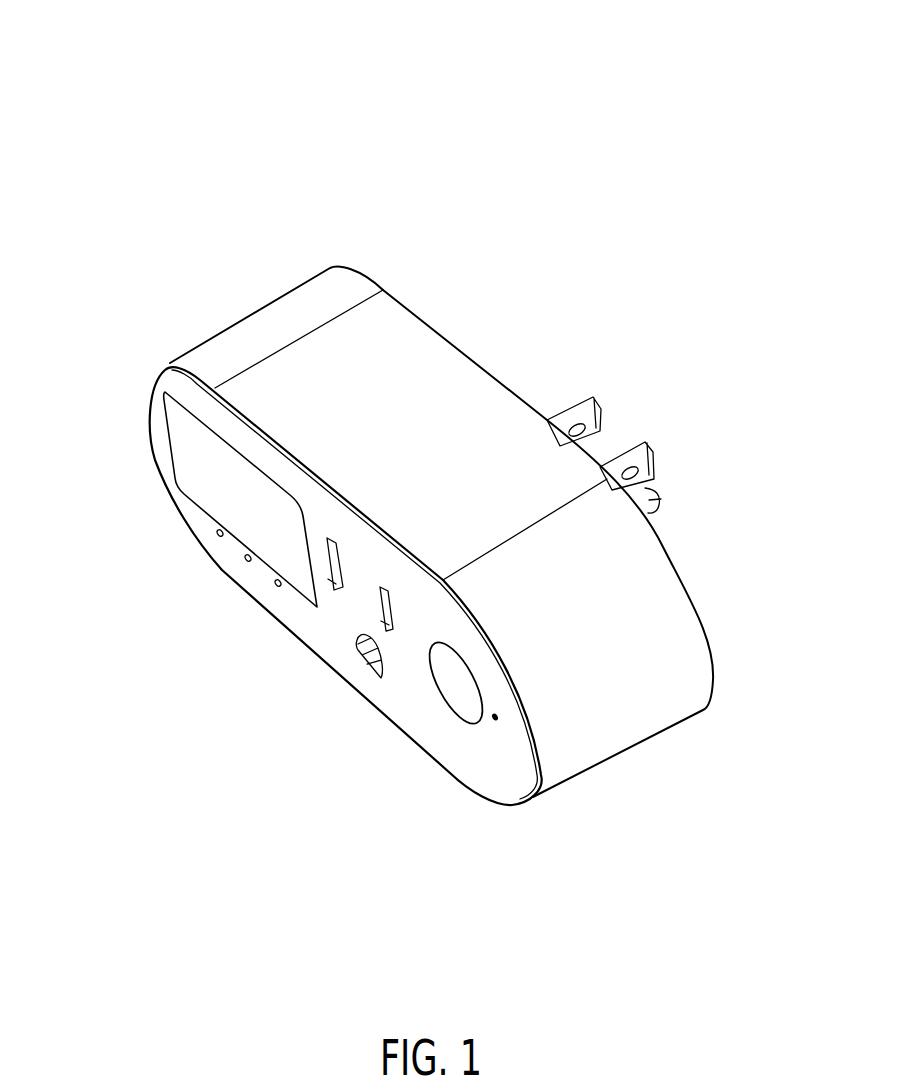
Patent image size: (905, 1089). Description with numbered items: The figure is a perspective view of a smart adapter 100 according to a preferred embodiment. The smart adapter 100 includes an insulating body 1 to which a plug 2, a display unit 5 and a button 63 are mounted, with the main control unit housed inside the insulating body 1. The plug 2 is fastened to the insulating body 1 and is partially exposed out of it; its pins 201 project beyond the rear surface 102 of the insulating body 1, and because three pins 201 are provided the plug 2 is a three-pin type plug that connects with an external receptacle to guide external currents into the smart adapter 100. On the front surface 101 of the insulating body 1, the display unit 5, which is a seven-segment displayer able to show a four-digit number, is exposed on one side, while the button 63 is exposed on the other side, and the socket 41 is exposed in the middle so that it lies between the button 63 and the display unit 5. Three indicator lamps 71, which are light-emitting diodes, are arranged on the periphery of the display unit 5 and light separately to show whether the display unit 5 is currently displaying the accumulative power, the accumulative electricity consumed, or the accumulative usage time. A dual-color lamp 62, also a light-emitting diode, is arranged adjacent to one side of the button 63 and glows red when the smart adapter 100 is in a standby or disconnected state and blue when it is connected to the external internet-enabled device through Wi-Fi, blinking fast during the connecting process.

The smart adapter 100 is at (88, 58).
The insulating body 1 is at (388, 322).
The plug 2 is at (567, 407).
The pin 201 is at (604, 418).
The rear surface 102 is at (693, 598).
The front surface 101 is at (317, 632).
The display unit 5 is at (200, 487).
The indicator lamp 71 is at (248, 560).
The socket 41 is at (373, 657).
The button 63 is at (457, 708).
The dual-color lamp 62 is at (495, 720).